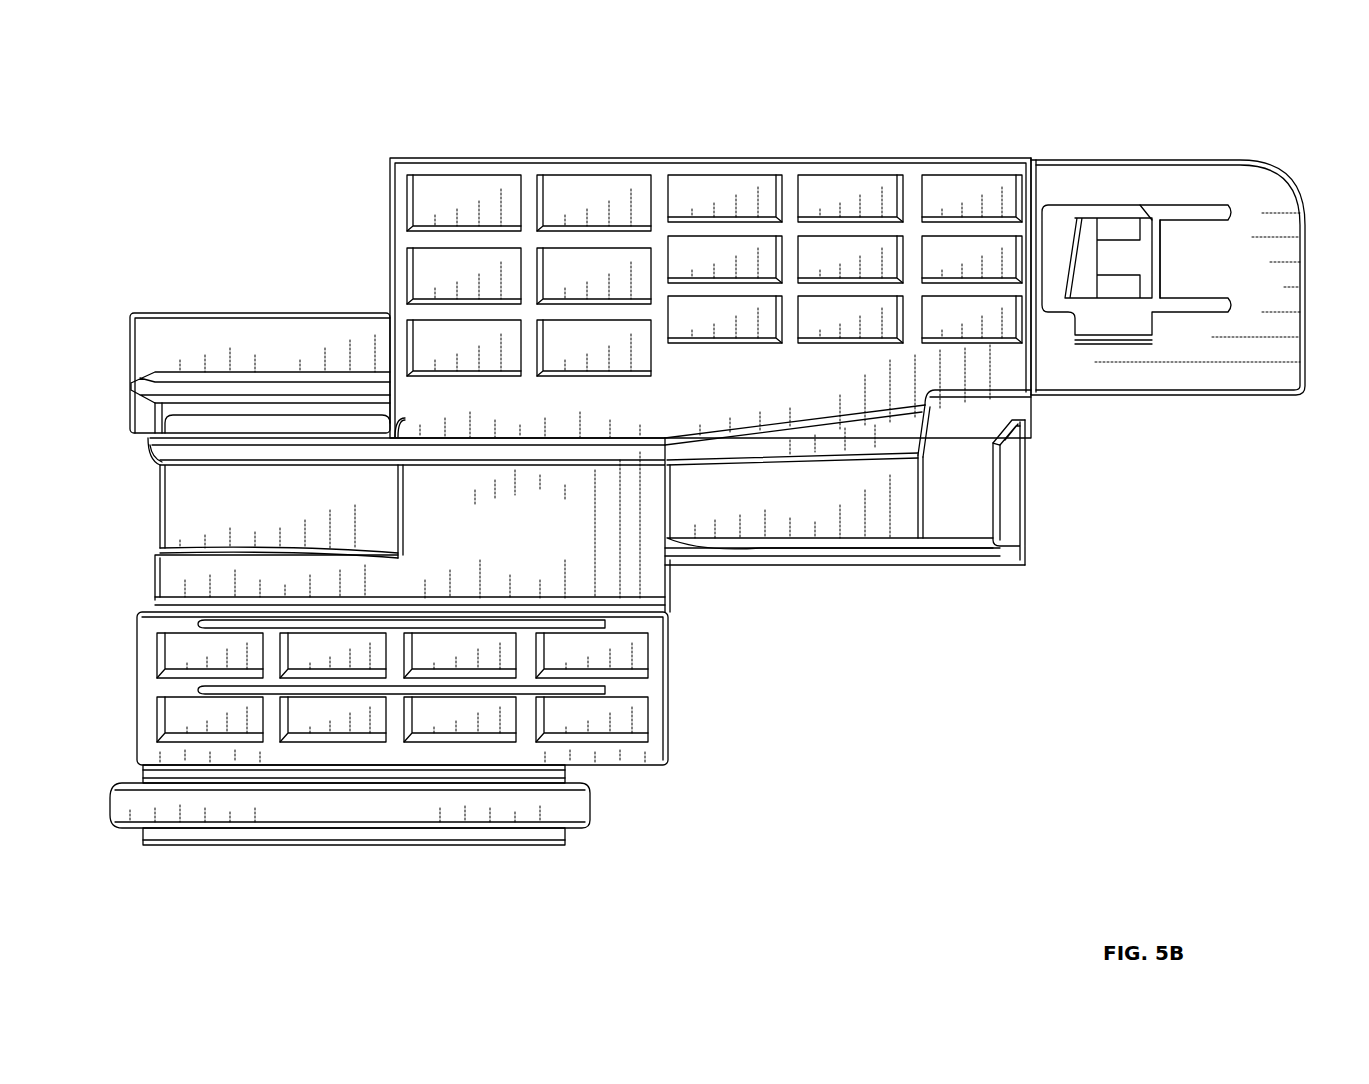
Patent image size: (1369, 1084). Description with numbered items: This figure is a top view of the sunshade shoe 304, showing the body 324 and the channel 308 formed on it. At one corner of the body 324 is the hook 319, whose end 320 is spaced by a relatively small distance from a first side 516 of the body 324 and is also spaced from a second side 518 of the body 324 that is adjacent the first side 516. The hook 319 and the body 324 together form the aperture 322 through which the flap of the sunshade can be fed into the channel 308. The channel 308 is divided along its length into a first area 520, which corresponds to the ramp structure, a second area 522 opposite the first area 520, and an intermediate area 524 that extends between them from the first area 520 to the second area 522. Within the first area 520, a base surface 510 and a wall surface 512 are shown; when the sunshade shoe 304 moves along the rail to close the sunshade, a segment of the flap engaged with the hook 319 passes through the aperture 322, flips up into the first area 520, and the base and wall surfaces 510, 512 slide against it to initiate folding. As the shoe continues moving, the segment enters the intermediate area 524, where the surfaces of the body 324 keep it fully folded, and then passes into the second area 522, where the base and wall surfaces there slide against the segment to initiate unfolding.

The sunshade shoe 304 is at (1325, 106).
The channel 308 is at (152, 511).
The hook 319 is at (1027, 502).
The end 320 is at (1026, 421).
The aperture 322 is at (1020, 410).
The body 324 is at (152, 565).
The base surface 510 is at (830, 512).
The wall surface 512 is at (797, 435).
The first side 516 is at (998, 400).
The second side 518 is at (926, 460).
The first area 520 is at (675, 572).
The second area 522 is at (268, 415).
The intermediate area 524 is at (400, 437).